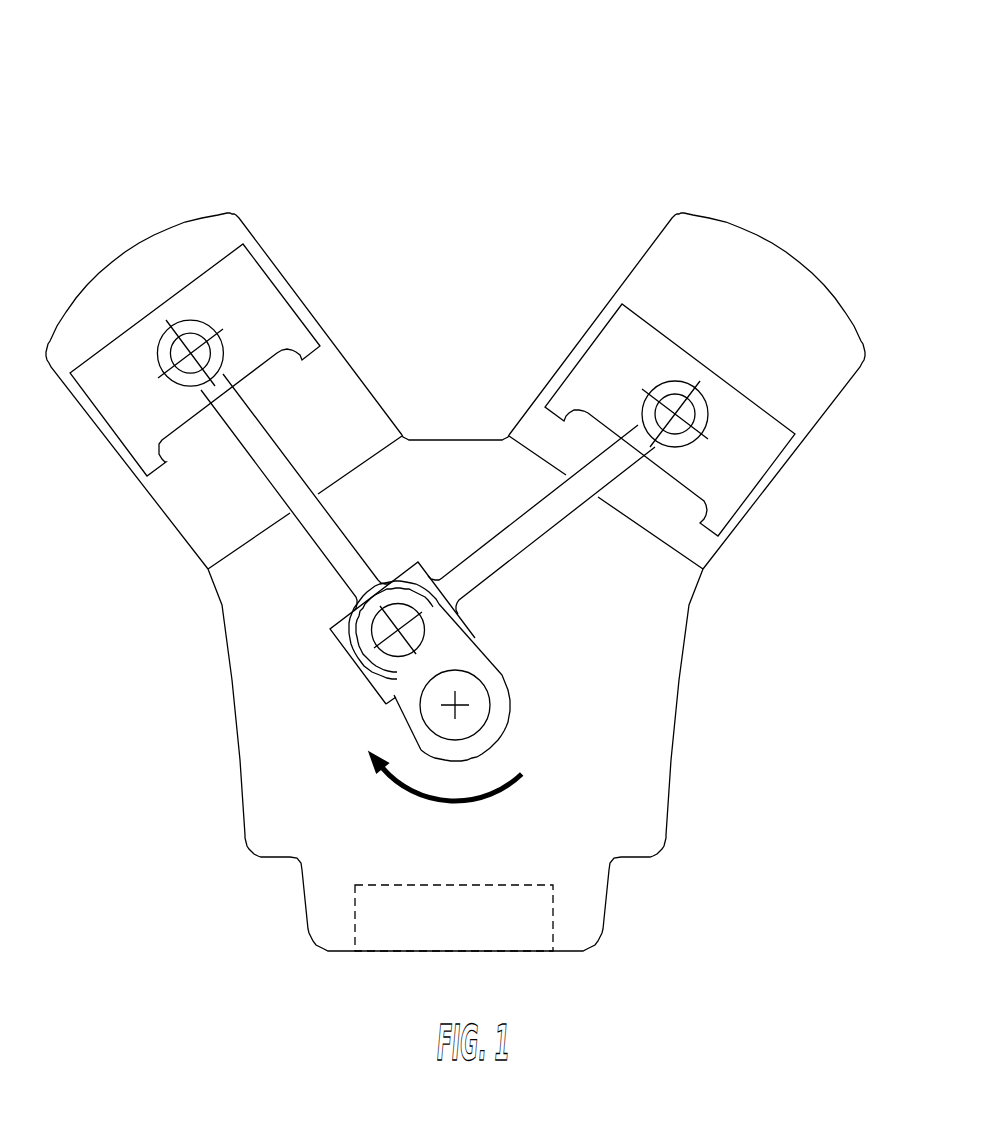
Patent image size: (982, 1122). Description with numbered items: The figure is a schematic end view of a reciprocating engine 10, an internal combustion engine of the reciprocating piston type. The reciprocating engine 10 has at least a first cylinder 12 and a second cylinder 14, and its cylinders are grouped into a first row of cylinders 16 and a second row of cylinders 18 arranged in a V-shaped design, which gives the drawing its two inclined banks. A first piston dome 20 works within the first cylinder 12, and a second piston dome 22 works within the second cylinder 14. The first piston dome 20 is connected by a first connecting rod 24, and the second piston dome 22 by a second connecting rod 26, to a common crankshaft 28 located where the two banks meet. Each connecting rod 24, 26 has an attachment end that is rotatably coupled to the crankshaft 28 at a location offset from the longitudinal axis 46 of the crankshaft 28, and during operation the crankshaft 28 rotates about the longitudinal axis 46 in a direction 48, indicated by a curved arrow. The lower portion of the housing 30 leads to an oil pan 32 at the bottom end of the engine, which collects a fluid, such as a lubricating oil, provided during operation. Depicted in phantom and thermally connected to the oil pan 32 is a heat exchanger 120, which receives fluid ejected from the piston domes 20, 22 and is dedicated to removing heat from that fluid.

The reciprocating engine 10 is at (770, 84).
The first cylinder 12 is at (309, 312).
The second cylinder 14 is at (843, 396).
The first row of cylinders 16 is at (97, 215).
The second row of cylinders 18 is at (814, 228).
The first piston dome 20 is at (115, 415).
The second piston dome 22 is at (756, 462).
The first connecting rod 24 is at (276, 476).
The second connecting rod 26 is at (528, 544).
The crankshaft 28 is at (491, 700).
The crankcase housing 30 is at (686, 655).
The oil pan 32 is at (603, 903).
The longitudinal axis 46 is at (464, 709).
The direction 48 is at (495, 793).
The heat exchanger 120 is at (508, 928).